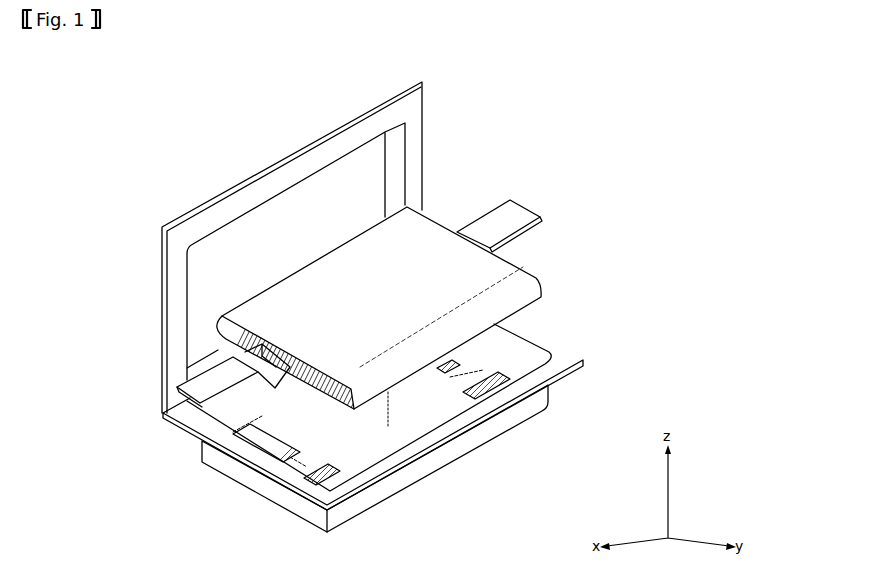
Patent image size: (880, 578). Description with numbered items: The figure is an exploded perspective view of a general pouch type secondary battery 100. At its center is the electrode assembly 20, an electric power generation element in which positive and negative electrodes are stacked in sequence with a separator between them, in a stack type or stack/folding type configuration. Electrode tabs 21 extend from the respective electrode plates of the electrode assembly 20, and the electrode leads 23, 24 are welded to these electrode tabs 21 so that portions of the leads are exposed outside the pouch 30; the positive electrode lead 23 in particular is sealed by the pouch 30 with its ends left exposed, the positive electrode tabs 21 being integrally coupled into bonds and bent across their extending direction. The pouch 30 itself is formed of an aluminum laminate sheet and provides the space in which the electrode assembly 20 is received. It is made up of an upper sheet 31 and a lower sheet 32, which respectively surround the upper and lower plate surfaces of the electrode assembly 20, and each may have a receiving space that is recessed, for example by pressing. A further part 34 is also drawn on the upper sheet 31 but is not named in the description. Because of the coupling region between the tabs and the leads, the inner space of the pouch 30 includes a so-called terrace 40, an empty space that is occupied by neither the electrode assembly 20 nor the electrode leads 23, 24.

The pouch type secondary battery 100 is at (221, 135).
The electrode assembly 20 is at (549, 276).
The electrode tabs 21 is at (223, 333).
The positive electrode lead 23 is at (177, 388).
The electrode lead 24 is at (518, 213).
The pouch 30 is at (408, 501).
The upper sheet 31 is at (417, 138).
The lower sheet 32 is at (458, 447).
The recess of vertical plate 34 is at (334, 131).
The terrace 40 is at (507, 385).